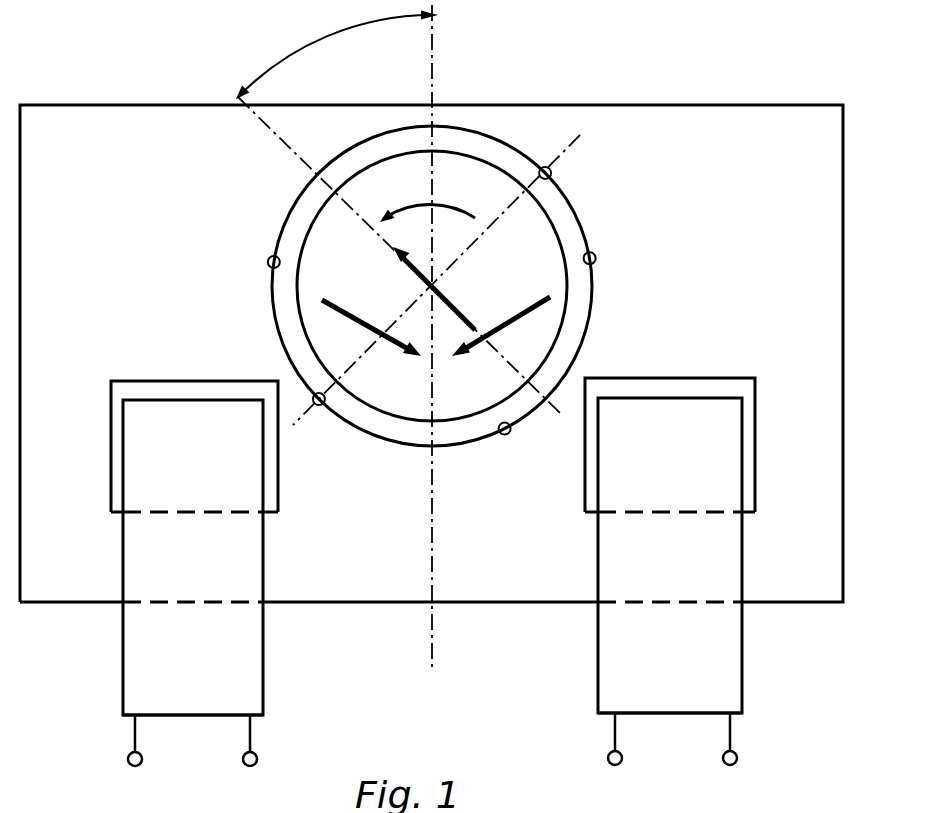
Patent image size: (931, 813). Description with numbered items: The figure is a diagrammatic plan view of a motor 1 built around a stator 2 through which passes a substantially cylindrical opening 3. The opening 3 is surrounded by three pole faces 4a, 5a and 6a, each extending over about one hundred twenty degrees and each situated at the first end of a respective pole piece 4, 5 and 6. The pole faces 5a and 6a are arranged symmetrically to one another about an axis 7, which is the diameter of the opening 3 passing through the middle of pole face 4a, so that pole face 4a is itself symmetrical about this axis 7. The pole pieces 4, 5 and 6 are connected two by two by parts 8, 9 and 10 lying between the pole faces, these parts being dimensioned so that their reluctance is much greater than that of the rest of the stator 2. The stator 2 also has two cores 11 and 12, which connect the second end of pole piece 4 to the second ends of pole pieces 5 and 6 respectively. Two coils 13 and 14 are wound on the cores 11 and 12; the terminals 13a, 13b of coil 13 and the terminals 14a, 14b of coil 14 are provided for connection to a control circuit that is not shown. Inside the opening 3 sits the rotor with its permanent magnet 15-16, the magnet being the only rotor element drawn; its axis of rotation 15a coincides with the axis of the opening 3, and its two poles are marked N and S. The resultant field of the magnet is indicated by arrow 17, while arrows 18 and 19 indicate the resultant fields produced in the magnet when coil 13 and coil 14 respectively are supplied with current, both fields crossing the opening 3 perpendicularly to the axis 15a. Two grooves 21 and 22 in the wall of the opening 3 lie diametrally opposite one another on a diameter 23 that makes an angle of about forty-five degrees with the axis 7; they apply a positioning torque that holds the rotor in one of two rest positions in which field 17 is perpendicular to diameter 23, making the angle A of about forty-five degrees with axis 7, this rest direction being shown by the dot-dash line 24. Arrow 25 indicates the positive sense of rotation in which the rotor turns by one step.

The motor 1 is at (660, 80).
The stator 2 is at (737, 136).
The cylindrical opening 3 is at (355, 163).
The pole piece 4 is at (504, 505).
The pole face 4a is at (506, 432).
The pole piece 5 is at (186, 302).
The pole face 5a is at (274, 262).
The pole piece 6 is at (716, 292).
The pole face 6a is at (592, 258).
The axis of symmetry 7 is at (436, 43).
The connecting part 8 is at (445, 116).
The connecting part 9 is at (575, 376).
The connecting part 10 is at (282, 378).
The core 11 is at (270, 572).
The core 12 is at (582, 605).
The coil 13 is at (152, 680).
The coil terminal 13a is at (127, 759).
The coil terminal 13b is at (259, 759).
The coil 14 is at (732, 636).
The coil terminal 14a is at (739, 758).
The coil terminal 14b is at (606, 758).
The rotor and permanent magnet 15-16 is at (477, 180).
The axis of rotation 15a is at (441, 291).
The magnetic field arrow 17 is at (417, 278).
The magnetic field arrow 18 is at (345, 321).
The magnetic field arrow 19 is at (527, 302).
The groove 21 is at (320, 412).
The groove 22 is at (560, 182).
The diameter 23 is at (588, 140).
The rest direction line 24 is at (295, 156).
The rotation sense arrow 25 is at (412, 203).
The angle A is at (330, 33).